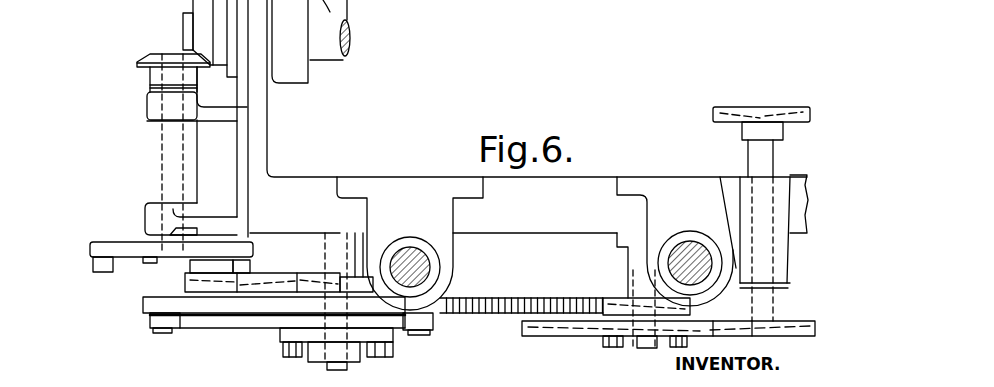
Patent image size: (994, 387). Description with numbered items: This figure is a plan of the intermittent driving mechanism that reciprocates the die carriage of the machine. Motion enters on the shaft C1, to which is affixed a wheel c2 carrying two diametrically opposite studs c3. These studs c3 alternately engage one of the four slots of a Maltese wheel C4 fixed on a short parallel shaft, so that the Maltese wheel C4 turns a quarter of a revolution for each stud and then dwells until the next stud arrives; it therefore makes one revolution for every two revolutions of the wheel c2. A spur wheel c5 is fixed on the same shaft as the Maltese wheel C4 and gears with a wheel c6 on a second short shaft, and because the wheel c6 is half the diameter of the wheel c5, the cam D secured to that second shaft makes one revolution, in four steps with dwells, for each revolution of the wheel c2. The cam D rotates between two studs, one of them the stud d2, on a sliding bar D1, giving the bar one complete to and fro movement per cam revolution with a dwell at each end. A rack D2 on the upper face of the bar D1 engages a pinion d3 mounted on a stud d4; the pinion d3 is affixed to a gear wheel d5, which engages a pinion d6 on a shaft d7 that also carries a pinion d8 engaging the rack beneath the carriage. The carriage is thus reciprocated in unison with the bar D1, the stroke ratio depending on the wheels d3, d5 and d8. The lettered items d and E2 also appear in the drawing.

The shaft C1 is at (155, 54).
The wheel c2 is at (128, 243).
The studs c3 is at (262, 237).
The Maltese wheel C4 is at (282, 237).
The spur wheel c5 is at (245, 316).
The wheel c6 is at (370, 262).
The cam D is at (192, 318).
The sliding bar D1 is at (147, 263).
The rack D2 is at (548, 300).
The bolt head d is at (150, 318).
The stud d2 is at (432, 320).
The pinion d3 is at (612, 298).
The stud d4 is at (640, 347).
The gear wheel d5 is at (522, 330).
The pinion d6 is at (798, 320).
The shaft d7 is at (773, 158).
The pinion d8 is at (722, 109).
The shaft E2 is at (410, 250).